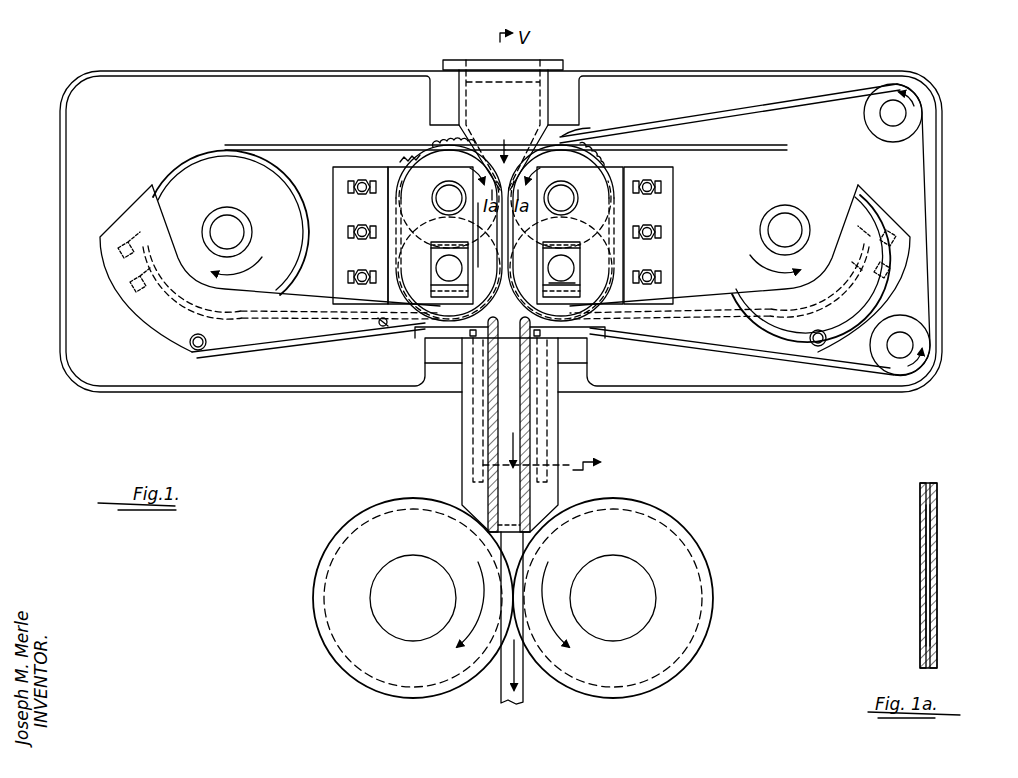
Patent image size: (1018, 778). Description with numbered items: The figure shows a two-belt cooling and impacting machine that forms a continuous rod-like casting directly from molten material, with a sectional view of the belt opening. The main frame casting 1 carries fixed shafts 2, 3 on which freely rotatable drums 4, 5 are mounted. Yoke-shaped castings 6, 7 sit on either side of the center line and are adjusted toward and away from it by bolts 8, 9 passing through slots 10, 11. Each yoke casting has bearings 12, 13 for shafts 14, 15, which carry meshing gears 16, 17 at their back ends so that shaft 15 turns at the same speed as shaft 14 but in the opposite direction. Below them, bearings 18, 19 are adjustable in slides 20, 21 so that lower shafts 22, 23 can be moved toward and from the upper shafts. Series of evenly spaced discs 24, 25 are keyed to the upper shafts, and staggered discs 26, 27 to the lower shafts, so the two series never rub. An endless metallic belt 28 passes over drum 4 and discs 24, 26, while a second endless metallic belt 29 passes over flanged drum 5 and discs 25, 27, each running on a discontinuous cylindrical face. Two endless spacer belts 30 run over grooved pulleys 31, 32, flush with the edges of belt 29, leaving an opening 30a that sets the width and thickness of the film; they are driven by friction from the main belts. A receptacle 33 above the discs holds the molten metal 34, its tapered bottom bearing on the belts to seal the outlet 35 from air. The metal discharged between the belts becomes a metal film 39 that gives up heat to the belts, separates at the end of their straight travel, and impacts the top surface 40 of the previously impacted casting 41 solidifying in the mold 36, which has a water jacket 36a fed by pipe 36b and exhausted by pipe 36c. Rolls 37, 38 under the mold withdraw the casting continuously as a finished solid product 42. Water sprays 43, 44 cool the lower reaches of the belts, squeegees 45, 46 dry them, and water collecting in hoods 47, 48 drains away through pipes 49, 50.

In FIG. 1, the main frame casting 1 is at (267, 88).
In FIG. 1, the shaft 2 is at (225, 232).
In FIG. 1, the shaft 3 is at (788, 232).
In FIG. 1, the drum 4 is at (160, 188).
In FIG. 1, the drum 5 is at (838, 178).
In FIG. 1, the yoke-shaped casting 6 is at (337, 167).
In FIG. 1, the yoke-shaped casting 7 is at (627, 170).
In FIG. 1, the bolt 8 is at (375, 208).
In FIG. 1, the bolt 9 is at (645, 231).
In FIG. 1, the slot 10 is at (352, 280).
In FIG. 1, the slot 11 is at (668, 225).
In FIG. 1, the bearing 12 is at (448, 196).
In FIG. 1, the bearing 13 is at (556, 185).
In FIG. 1, the shaft 14 is at (445, 143).
In FIG. 1, the shaft 15 is at (567, 200).
In FIG. 1, the gear 16 is at (442, 138).
In FIG. 1, the gear 17 is at (598, 152).
In FIG. 1, the bearing 18 is at (430, 297).
In FIG. 1, the bearing 19 is at (573, 268).
In FIG. 1, the slide 20 is at (433, 287).
In FIG. 1, the slide 21 is at (562, 270).
In FIG. 1, the shaft 22 is at (447, 272).
In FIG. 1, the shaft 23 is at (575, 285).
In FIG. 1, the disc 24 is at (403, 158).
In FIG. 1, the disc 25 is at (567, 142).
In FIG. 1, the disc 26 is at (383, 322).
In FIG. 1, the disc 27 is at (618, 328).
In FIG. 1, the endless metallic belt 28 is at (291, 143).
In FIG. 1A, the endless metallic belt 28 is at (921, 518).
In FIG. 1, the endless metallic belt 29 is at (712, 145).
In FIG. 1A, the endless metallic belt 29 is at (938, 530).
In FIG. 1, the spacer belt 30 is at (830, 88).
In FIG. 1A, the spacer belt 30 is at (930, 668).
In FIG. 1A, the opening 30a is at (926, 560).
In FIG. 1, the grooved pulley 31 is at (918, 112).
In FIG. 1, the grooved pulley 32 is at (924, 337).
In FIG. 1, the receptacle 33 is at (452, 62).
In FIG. 1, the molten metal 34 is at (520, 93).
In FIG. 1, the outlet 35 is at (498, 150).
In FIG. 1, the mold 36 is at (473, 472).
In FIG. 1, the water jacket 36a is at (540, 437).
In FIG. 1, the pipe 36b is at (510, 345).
In FIG. 1, the pipe 36c is at (583, 470).
In FIG. 1, the roll 37 is at (690, 590).
In FIG. 1, the roll 38 is at (332, 600).
In FIG. 1, the metal film 39 is at (566, 293).
In FIG. 1, the top surface 40 is at (500, 335).
In FIG. 1, the casting 41 is at (508, 420).
In FIG. 1, the finished solid product 42 is at (507, 673).
In FIG. 1, the water spray 43 is at (348, 288).
In FIG. 1, the water spray 44 is at (650, 325).
In FIG. 1, the squeegee 45 is at (135, 288).
In FIG. 1, the squeegee 46 is at (883, 273).
In FIG. 1, the hood 47 is at (155, 333).
In FIG. 1, the hood 48 is at (847, 348).
In FIG. 1, the pipe 49 is at (190, 352).
In FIG. 1, the pipe 50 is at (820, 348).